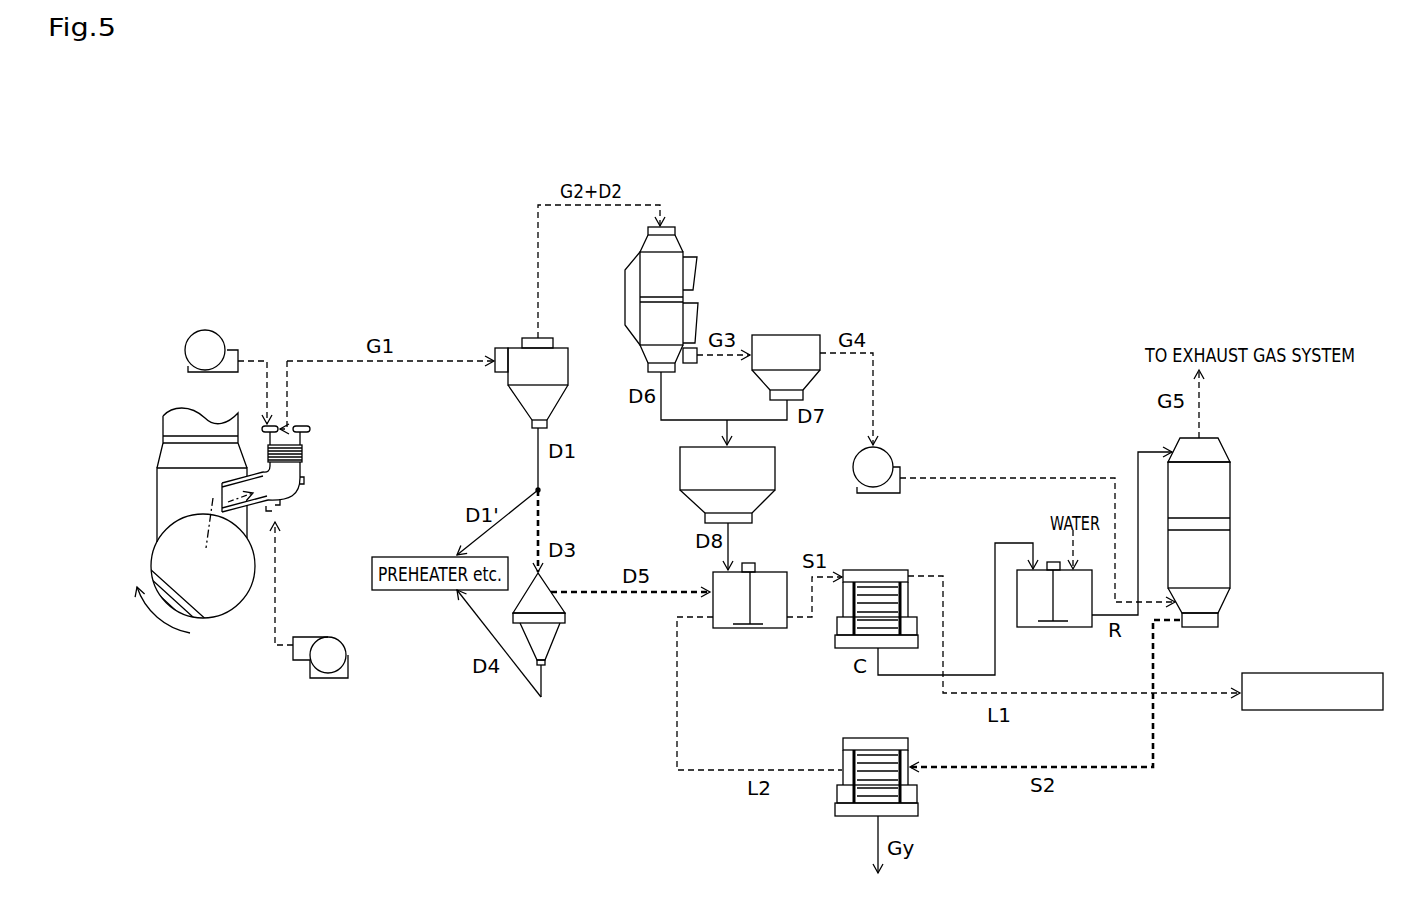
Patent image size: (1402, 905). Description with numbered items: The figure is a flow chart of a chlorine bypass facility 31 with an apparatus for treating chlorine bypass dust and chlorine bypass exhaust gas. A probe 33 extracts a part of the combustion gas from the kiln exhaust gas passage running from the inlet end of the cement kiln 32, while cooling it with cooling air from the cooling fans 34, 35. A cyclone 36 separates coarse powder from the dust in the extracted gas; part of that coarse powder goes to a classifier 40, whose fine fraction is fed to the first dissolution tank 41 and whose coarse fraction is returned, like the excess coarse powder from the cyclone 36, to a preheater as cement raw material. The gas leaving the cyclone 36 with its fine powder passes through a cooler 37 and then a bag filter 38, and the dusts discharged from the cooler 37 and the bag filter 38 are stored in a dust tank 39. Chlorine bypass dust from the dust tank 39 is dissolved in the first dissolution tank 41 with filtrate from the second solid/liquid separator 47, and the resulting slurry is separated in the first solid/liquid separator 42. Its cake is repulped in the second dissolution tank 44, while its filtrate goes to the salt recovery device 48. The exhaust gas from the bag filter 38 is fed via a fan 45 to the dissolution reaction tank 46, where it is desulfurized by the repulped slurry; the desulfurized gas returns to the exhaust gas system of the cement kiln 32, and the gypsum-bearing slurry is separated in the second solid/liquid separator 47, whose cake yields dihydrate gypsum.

The chlorine bypass facility 31 is at (763, 139).
The cement kiln 32 is at (213, 618).
The probe 33 is at (290, 490).
The cooling fan 34 is at (330, 673).
The cooling fan 35 is at (205, 330).
The cyclone 36 is at (516, 405).
The cooler 37 is at (678, 243).
The bag filter 38 is at (788, 333).
The dust tank 39 is at (678, 468).
The classifier 40 is at (557, 643).
The first dissolution tank 41 is at (738, 630).
The first solid/liquid separator 42 is at (877, 570).
The second dissolution tank 44 is at (1030, 628).
The fan 45 is at (858, 485).
The dissolution reaction tank 46 is at (1233, 490).
The second solid/liquid separator 47 is at (877, 738).
The salt recovery device 48 is at (1275, 673).